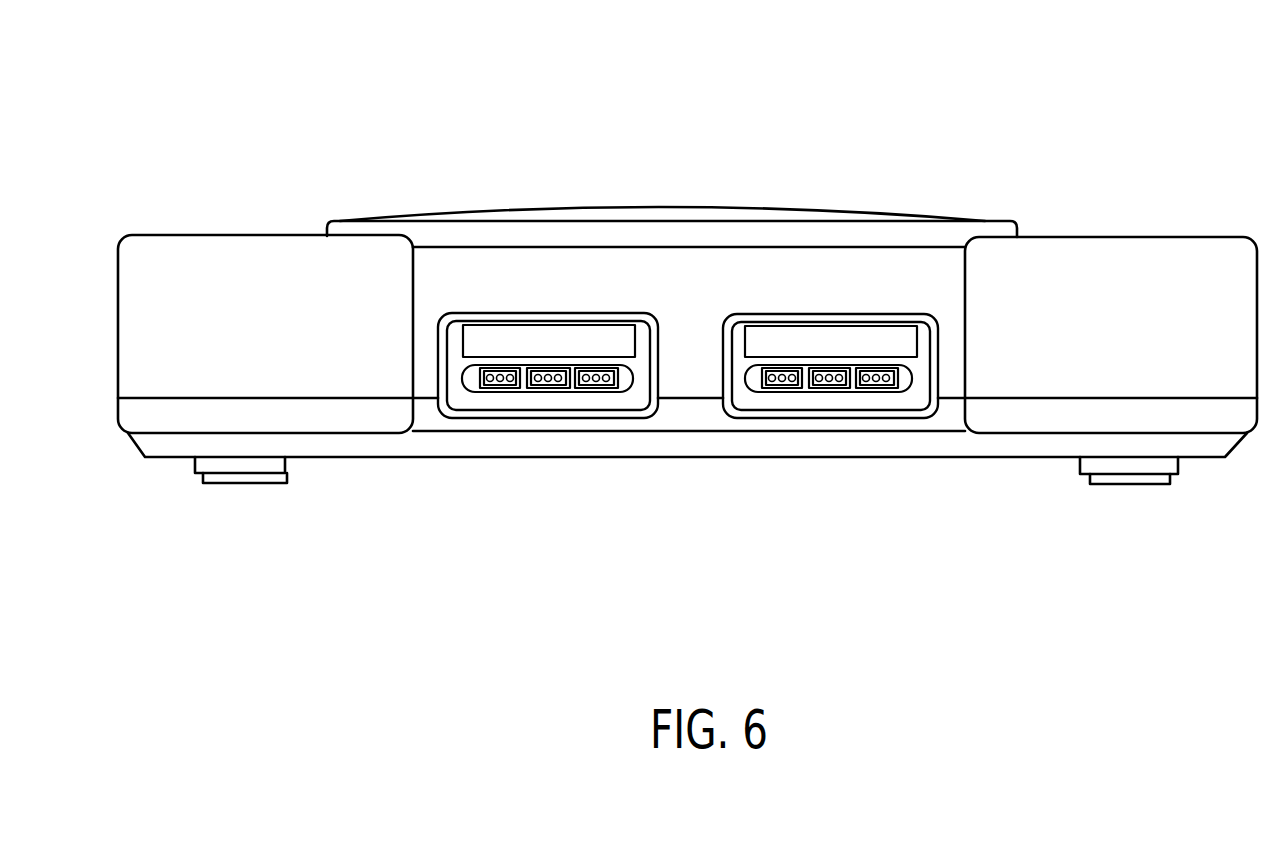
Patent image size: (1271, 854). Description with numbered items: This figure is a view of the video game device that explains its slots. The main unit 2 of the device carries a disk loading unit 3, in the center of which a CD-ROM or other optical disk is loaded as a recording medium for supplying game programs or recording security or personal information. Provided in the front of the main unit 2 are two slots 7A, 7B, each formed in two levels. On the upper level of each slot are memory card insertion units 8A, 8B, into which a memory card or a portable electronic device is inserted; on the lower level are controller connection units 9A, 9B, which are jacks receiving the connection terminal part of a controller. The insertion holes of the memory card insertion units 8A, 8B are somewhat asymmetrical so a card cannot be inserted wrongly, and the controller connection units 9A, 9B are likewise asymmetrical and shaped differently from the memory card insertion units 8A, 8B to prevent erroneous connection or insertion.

The main unit 2 is at (995, 193).
The disk loading unit 3 is at (705, 218).
The slot 7A is at (503, 417).
The slot 7B is at (796, 417).
The memory card insertion unit 8A is at (532, 337).
The memory card insertion unit 8B is at (835, 340).
The controller connection unit 9A is at (555, 392).
The controller connection unit 9B is at (835, 392).